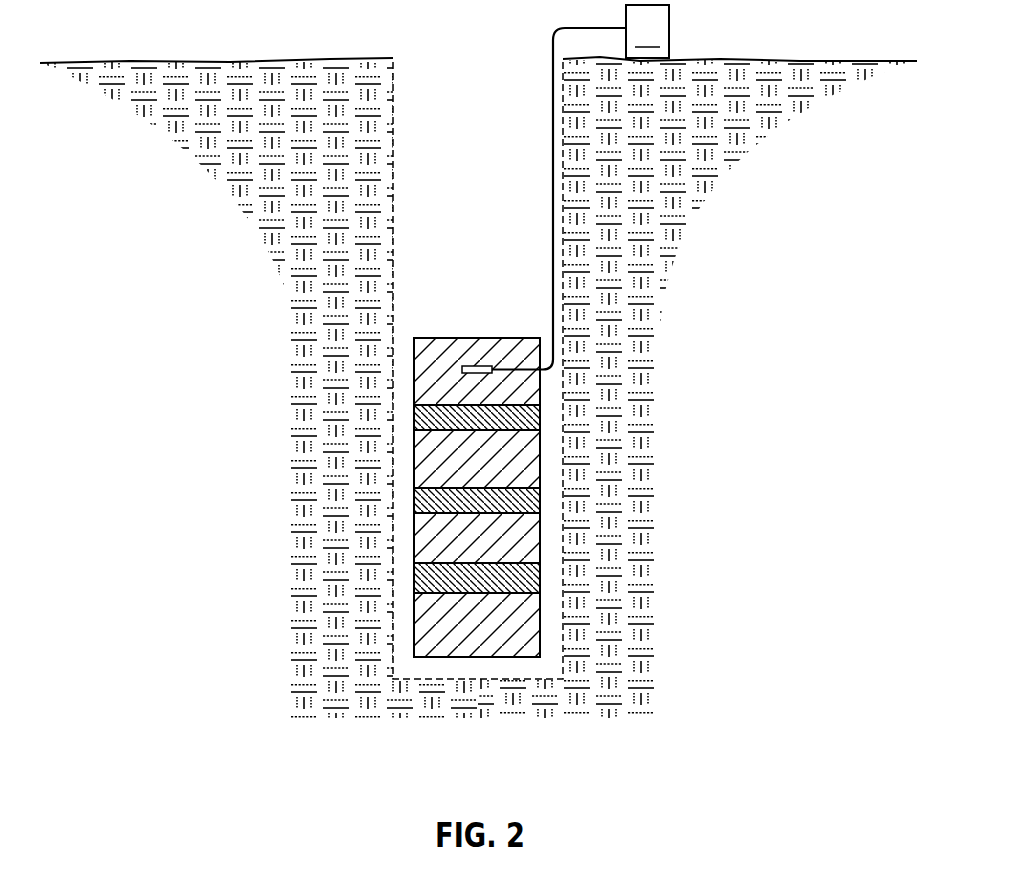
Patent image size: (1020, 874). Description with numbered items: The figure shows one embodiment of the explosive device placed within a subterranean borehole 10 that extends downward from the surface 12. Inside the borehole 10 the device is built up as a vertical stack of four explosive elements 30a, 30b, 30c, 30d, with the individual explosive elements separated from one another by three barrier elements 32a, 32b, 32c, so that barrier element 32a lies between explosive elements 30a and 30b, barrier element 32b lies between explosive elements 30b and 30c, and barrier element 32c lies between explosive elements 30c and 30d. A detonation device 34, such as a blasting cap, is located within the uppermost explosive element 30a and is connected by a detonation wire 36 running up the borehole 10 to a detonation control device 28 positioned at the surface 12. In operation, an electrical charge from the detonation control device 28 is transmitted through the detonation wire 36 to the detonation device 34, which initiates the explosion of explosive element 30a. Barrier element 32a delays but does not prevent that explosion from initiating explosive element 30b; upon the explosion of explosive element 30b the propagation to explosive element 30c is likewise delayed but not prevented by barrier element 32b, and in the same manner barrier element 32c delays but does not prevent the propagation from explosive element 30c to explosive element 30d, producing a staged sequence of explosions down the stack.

The borehole 10 is at (388, 204).
The surface 12 is at (783, 60).
The detonation control device 28 is at (647, 31).
The explosive element 30a is at (403, 373).
The explosive element 30b is at (403, 462).
The explosive element 30c is at (403, 547).
The explosive element 30d is at (403, 630).
The barrier element 32a is at (545, 417).
The barrier element 32b is at (545, 500).
The barrier element 32c is at (545, 585).
The detonation device 34 is at (482, 366).
The detonation wire 36 is at (553, 150).